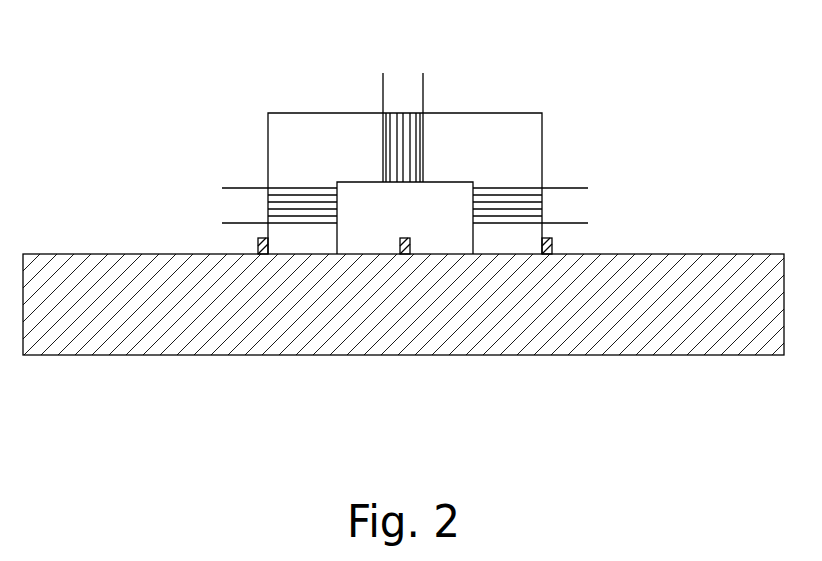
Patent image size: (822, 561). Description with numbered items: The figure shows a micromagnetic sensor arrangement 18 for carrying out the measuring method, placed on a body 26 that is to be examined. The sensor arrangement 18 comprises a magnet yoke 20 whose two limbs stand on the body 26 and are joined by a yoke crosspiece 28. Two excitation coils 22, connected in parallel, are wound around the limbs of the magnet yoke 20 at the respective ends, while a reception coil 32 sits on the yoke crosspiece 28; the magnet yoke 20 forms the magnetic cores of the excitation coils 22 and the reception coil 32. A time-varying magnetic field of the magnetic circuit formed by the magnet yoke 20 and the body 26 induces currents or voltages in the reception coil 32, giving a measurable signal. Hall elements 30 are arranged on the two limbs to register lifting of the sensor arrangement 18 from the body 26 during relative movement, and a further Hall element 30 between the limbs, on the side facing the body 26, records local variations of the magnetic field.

The sensor arrangement 18 is at (556, 83).
The magnet yoke 20 is at (478, 125).
The excitation coils 22 is at (287, 187).
The body 26 is at (487, 346).
The yoke crosspiece 28 is at (442, 108).
The Hall elements 30 is at (254, 248).
The reception coil 32 is at (378, 118).